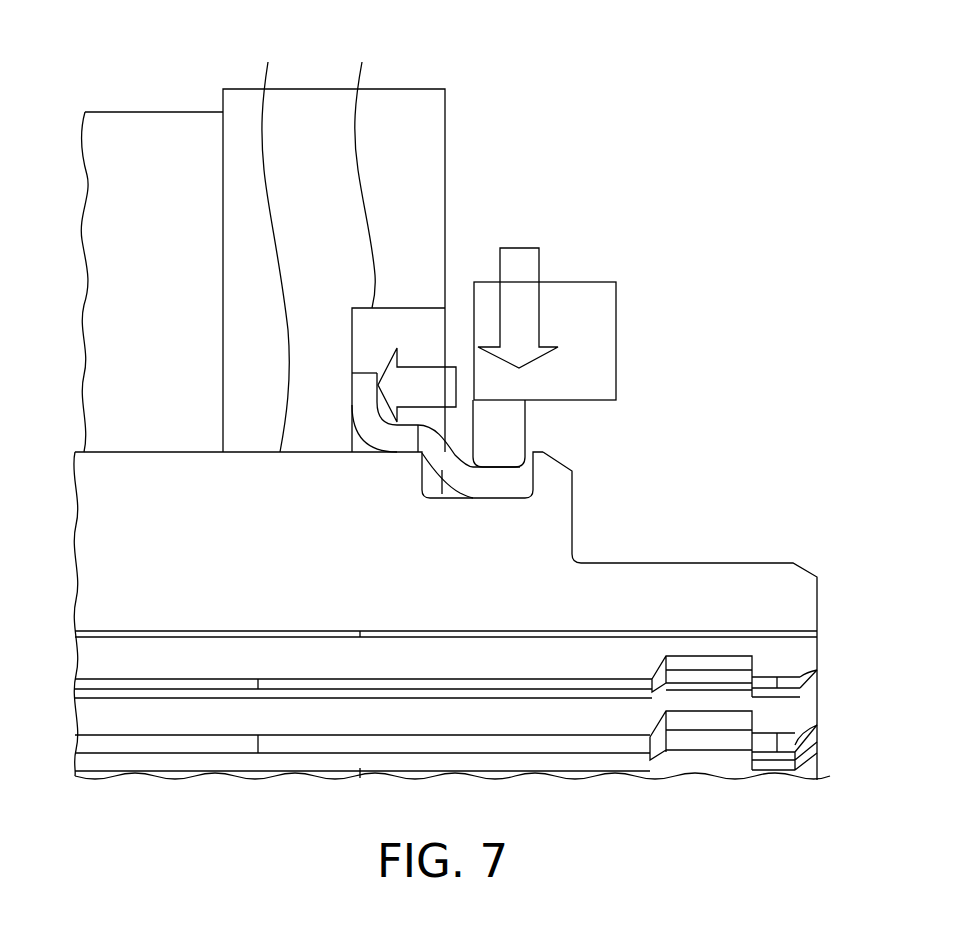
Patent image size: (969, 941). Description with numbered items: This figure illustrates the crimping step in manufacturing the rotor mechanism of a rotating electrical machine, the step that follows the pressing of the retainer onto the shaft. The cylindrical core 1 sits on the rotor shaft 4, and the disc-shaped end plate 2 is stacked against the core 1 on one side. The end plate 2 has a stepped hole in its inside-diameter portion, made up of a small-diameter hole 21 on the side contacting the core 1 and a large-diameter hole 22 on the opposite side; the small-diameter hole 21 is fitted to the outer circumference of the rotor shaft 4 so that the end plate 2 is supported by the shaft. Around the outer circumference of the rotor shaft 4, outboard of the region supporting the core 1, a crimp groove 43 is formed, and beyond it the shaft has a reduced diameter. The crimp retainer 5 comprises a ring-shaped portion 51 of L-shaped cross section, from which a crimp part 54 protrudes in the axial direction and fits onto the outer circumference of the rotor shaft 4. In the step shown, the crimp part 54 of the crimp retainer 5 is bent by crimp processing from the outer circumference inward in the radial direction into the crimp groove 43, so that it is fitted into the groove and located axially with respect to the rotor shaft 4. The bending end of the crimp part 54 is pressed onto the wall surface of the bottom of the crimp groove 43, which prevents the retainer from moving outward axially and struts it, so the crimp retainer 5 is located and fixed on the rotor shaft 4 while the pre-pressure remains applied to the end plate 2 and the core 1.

The core 1 is at (140, 112).
The end plate 2 is at (447, 104).
The small-diameter hole 21 is at (272, 243).
The large-diameter hole 22 is at (363, 171).
The rotor shaft 4 is at (718, 562).
The crimp groove 43 is at (470, 494).
The crimp retainer 5 is at (510, 482).
The ring-shaped portion 51 is at (367, 383).
The crimp part 54 is at (458, 475).